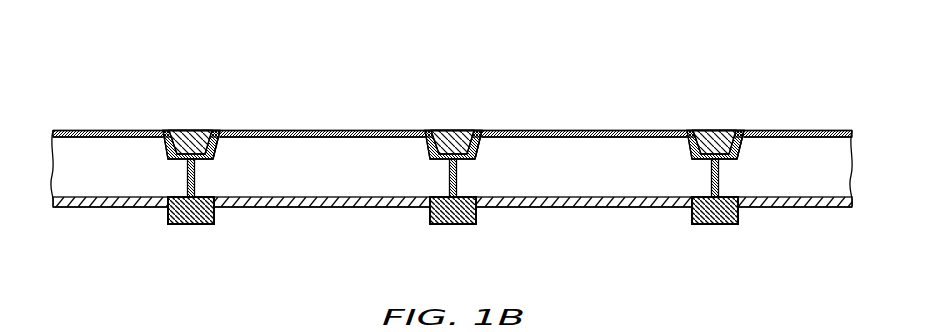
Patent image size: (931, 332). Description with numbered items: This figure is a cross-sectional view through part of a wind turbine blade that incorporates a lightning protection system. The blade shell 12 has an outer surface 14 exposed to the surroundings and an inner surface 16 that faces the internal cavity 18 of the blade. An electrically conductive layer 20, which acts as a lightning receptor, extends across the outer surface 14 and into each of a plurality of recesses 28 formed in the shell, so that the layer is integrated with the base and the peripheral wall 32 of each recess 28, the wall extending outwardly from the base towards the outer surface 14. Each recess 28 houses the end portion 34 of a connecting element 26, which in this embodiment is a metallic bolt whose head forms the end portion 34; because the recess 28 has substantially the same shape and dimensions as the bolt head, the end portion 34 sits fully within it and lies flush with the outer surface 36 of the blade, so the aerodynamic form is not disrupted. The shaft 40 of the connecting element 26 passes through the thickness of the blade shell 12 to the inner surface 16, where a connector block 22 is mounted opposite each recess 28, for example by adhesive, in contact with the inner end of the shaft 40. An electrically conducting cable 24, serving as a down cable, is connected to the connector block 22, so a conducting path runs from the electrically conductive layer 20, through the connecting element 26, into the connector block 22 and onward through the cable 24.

The blade shell 12 is at (114, 75).
The outer surface 14 is at (303, 130).
The inner surface 16 is at (321, 196).
The internal cavity 18 is at (124, 258).
The electrically conductive layer 20 is at (585, 130).
The connector block 22 is at (191, 225).
The electrically conducting cable 24 is at (585, 207).
The connecting element 26 is at (192, 131).
The recess 28 is at (212, 122).
The peripheral wall 32 is at (217, 150).
The end portion 34 is at (175, 131).
The outer surface of the blade 36 is at (366, 118).
The shaft 40 is at (186, 180).